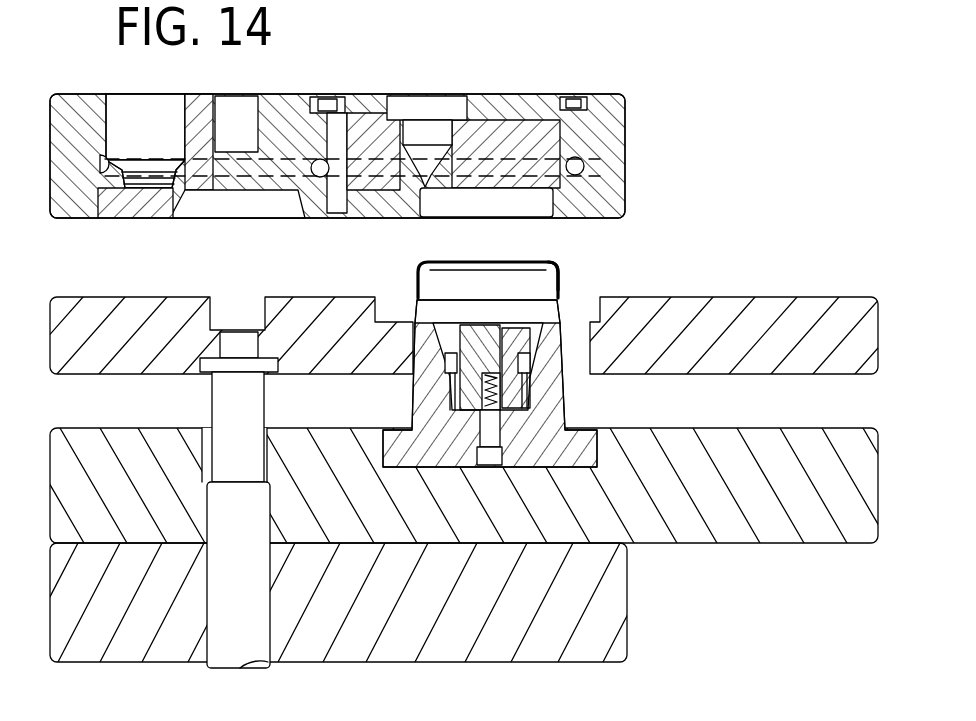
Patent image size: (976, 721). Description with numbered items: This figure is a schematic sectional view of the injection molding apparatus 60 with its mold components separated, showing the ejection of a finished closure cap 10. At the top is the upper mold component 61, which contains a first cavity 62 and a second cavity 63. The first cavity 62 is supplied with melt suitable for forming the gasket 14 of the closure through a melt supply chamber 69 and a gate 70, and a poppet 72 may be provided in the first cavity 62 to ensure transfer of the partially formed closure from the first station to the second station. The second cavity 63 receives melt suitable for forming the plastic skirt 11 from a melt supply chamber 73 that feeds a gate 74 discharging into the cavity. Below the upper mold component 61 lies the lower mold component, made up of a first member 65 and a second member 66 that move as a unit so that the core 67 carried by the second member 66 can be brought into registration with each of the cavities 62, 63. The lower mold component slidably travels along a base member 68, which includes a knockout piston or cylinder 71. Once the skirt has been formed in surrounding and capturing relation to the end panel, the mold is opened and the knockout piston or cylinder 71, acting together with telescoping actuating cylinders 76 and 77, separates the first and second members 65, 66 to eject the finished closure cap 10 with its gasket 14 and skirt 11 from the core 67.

The closure cap 10 is at (510, 261).
The plastic skirt 11 is at (563, 277).
The gasket 14 is at (439, 275).
The injection molding apparatus 60 is at (725, 191).
The upper mold component 61 is at (62, 134).
The first cavity 62 is at (299, 212).
The second cavity 63 is at (547, 220).
The first member 65 is at (65, 337).
The second member 66 is at (59, 465).
The core 67 is at (551, 379).
The base member 68 is at (72, 611).
The melt supply chamber 69 is at (162, 100).
The gate 70 is at (161, 187).
The knockout piston or cylinder 71 is at (257, 627).
The poppet 72 is at (236, 108).
The melt supply chamber 73 is at (444, 104).
The gate 74 is at (445, 176).
The telescoping actuating cylinder 76 is at (227, 392).
The telescoping actuating cylinder 77 is at (242, 345).